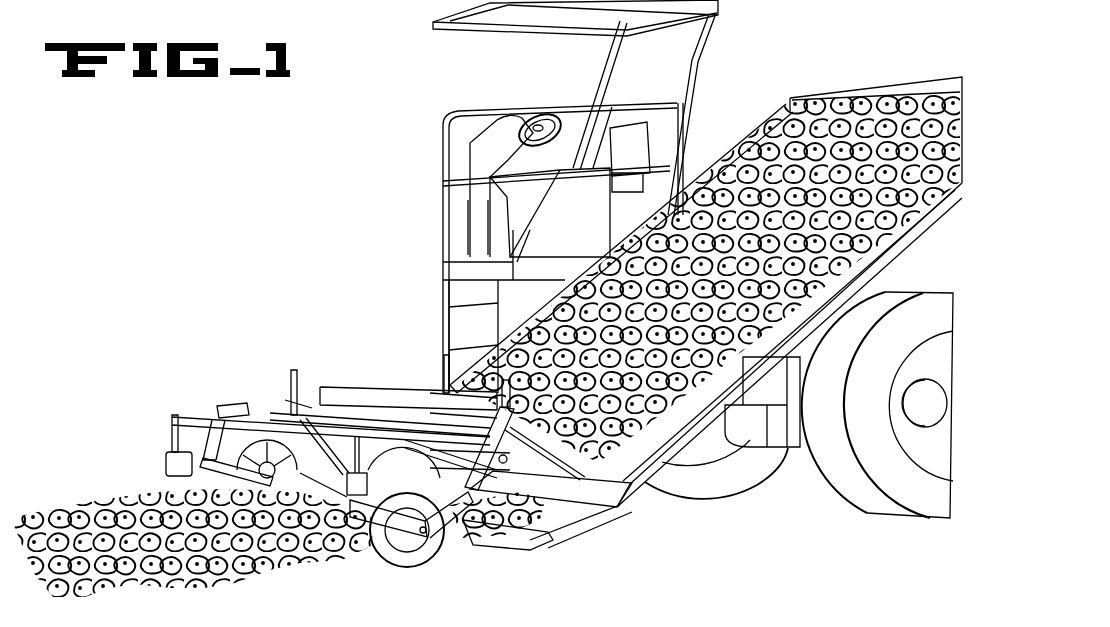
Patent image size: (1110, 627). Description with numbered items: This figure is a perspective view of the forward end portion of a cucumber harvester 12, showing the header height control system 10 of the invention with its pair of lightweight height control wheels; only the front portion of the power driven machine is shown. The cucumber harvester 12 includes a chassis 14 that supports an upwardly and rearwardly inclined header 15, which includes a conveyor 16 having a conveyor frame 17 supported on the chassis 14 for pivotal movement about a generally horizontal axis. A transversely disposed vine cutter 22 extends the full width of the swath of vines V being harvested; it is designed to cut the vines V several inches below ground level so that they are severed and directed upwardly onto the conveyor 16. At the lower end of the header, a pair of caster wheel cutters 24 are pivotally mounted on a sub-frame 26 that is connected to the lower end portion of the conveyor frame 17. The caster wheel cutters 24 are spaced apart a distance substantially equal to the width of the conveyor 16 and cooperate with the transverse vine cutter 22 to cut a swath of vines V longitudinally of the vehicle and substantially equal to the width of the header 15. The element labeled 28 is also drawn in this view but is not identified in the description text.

The header height control system 10 is at (220, 397).
The cucumber harvester 12 is at (440, 145).
The chassis 14 is at (788, 442).
The header 15 is at (779, 109).
The conveyor 16 is at (871, 228).
The conveyor frame 17 is at (608, 256).
The vine cutter 22 is at (498, 547).
The caster wheel cutters 24 is at (205, 492).
The sub-frame 26 is at (468, 438).
The support post 28 is at (268, 440).
The vines V is at (70, 522).